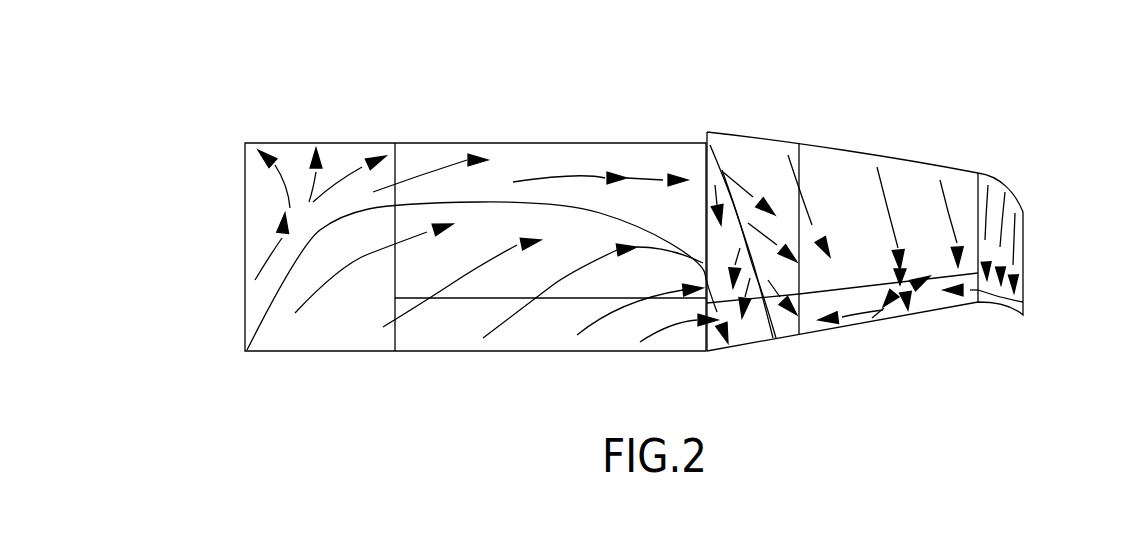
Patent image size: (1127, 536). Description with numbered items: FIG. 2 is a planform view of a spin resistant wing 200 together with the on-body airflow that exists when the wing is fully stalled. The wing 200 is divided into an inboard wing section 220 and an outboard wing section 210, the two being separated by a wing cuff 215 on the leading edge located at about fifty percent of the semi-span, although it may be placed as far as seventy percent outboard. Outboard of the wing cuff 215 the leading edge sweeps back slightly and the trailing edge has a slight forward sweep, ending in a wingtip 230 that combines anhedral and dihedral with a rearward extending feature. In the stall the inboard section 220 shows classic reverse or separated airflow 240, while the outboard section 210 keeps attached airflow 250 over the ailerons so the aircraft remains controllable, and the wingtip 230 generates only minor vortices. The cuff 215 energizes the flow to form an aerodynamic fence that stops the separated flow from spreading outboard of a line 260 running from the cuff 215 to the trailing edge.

The wing 200 is at (973, 67).
The outboard wing section 210 is at (1023, 369).
The wing cuff 215 is at (710, 108).
The inboard wing section 220 is at (705, 374).
The wingtip 230 is at (1037, 207).
The separated airflow 240 is at (493, 210).
The attached airflow 250 is at (845, 162).
The line 260 is at (750, 172).